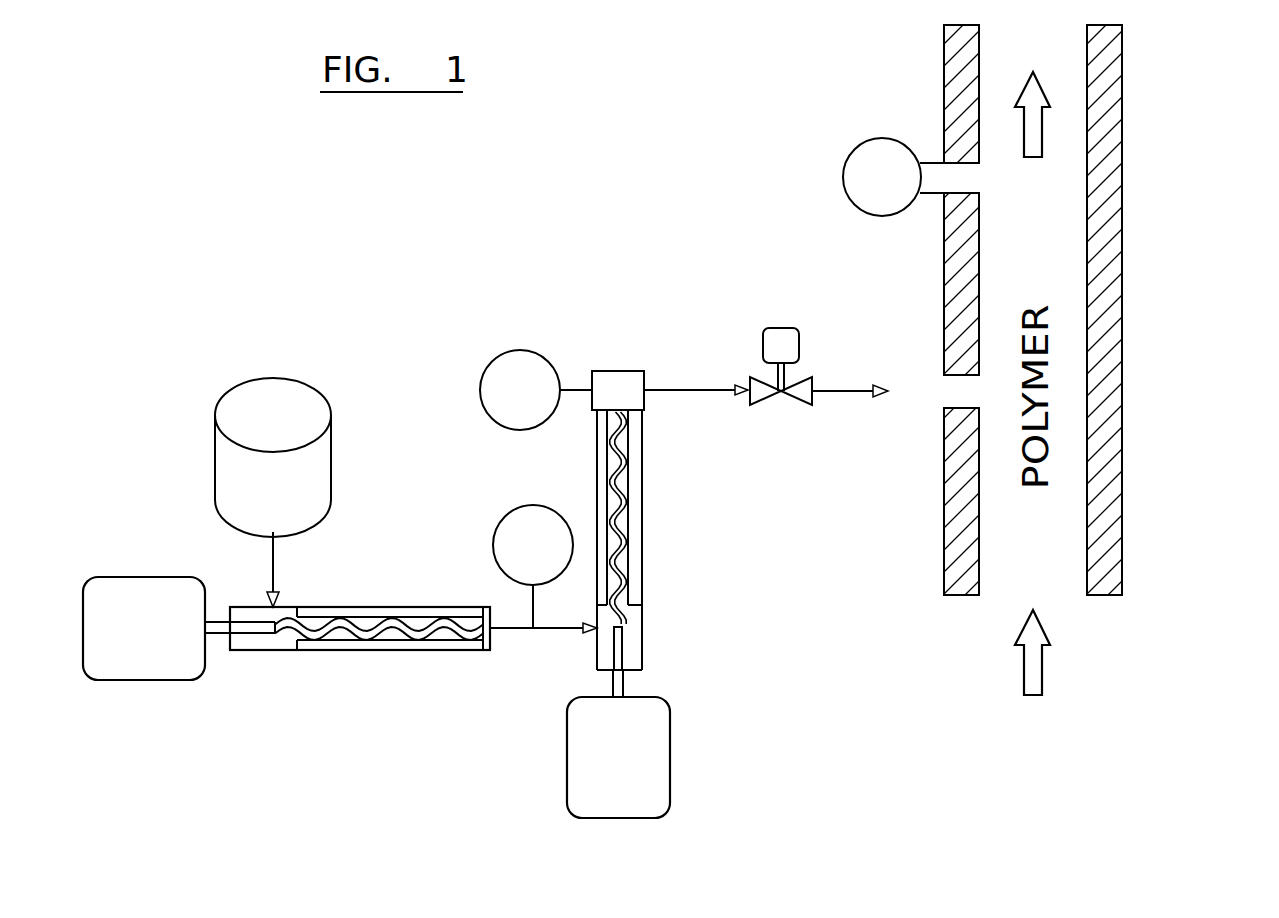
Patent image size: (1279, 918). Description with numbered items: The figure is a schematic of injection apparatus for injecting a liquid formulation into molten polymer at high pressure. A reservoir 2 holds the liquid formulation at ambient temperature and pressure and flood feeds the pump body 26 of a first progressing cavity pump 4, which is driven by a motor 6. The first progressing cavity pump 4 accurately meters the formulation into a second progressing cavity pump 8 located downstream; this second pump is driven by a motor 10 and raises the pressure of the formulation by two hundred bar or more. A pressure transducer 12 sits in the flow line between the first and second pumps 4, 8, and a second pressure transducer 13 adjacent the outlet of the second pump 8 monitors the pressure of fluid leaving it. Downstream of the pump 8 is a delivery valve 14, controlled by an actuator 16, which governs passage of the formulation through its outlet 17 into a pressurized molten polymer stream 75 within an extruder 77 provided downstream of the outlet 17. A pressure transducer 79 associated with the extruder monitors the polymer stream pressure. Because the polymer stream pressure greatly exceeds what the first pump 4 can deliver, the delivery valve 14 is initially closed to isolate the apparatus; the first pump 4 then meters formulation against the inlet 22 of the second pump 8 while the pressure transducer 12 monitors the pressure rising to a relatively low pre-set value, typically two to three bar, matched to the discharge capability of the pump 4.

The reservoir 2 is at (232, 468).
The first progressing cavity pump 4 is at (317, 650).
The motor 6 is at (133, 660).
The second progressing cavity pump 8 is at (643, 636).
The motor 10 is at (645, 748).
The pressure transducer 12 is at (508, 520).
The second pressure transducer 13 is at (520, 350).
The delivery valve 14 is at (773, 398).
The actuator 16 is at (781, 328).
The outlet 17 is at (885, 398).
The inlet 22 is at (595, 643).
The pump body 26 is at (283, 607).
The pressurized molten polymer stream 75 is at (1035, 503).
The extruder 77 is at (1125, 250).
The pressure transducer 79 is at (862, 143).